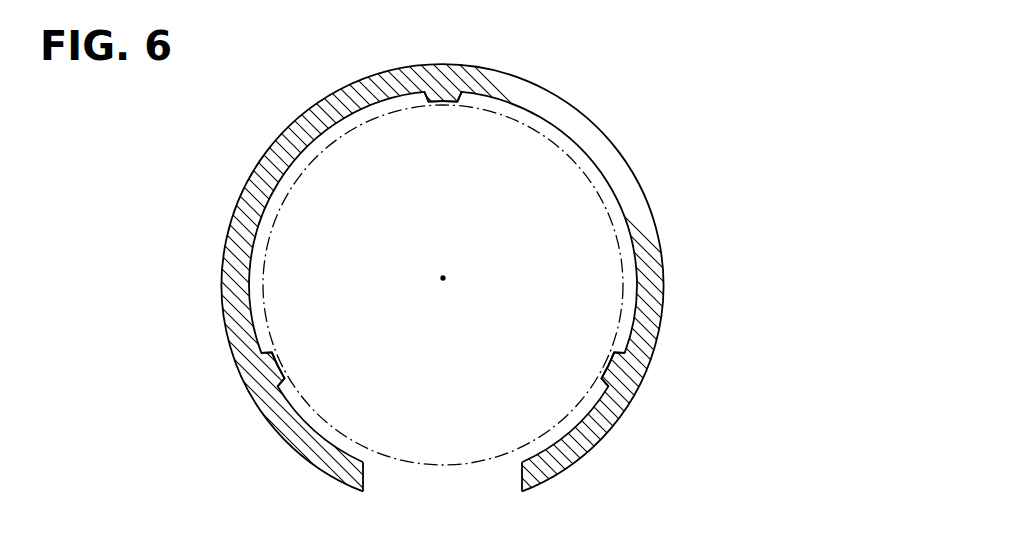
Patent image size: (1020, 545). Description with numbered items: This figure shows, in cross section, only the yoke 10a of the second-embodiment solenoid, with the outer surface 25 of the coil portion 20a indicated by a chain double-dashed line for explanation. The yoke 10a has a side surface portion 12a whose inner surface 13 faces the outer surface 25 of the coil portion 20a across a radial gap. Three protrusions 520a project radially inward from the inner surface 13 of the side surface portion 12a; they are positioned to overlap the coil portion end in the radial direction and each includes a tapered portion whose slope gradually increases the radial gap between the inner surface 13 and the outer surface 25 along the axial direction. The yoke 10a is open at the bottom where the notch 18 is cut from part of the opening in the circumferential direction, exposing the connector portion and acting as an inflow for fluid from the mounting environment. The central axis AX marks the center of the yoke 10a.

The inner surface 13 is at (469, 285).
The yoke 10a is at (484, 277).
The side surface portion 12a is at (614, 152).
The coil portion 20a is at (506, 277).
The outer surface 25 is at (626, 222).
The protrusion 520a is at (452, 97).
The notch 18 is at (522, 483).
The optical axis AX is at (443, 278).